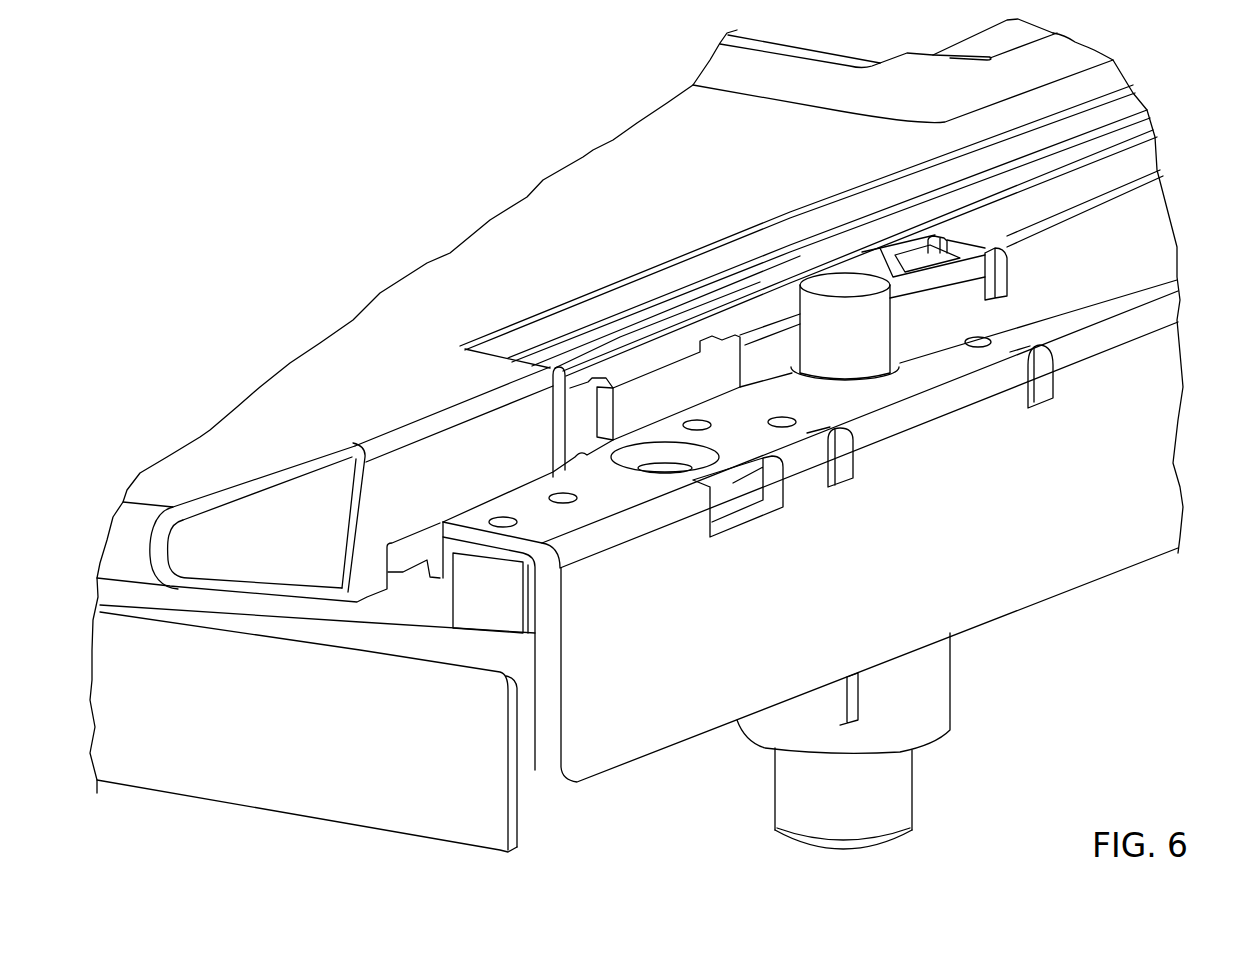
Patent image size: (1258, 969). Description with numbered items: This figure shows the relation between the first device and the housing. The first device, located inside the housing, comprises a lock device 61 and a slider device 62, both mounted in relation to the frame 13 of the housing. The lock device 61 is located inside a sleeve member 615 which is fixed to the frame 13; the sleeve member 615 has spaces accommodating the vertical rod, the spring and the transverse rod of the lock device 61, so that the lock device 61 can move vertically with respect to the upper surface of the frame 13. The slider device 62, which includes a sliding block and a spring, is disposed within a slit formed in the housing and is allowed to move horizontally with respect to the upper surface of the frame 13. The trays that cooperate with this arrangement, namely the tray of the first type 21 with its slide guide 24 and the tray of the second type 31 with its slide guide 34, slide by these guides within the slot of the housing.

The tray of the first type 21 is at (636, 435).
The tray of the second type 31 is at (540, 227).
The slide guide 34 is at (853, 230).
The slide guide 24 is at (1080, 187).
The slider device 62 is at (972, 283).
The lock device 61 is at (865, 318).
The frame 13 is at (627, 728).
The sleeve member 615 is at (902, 770).